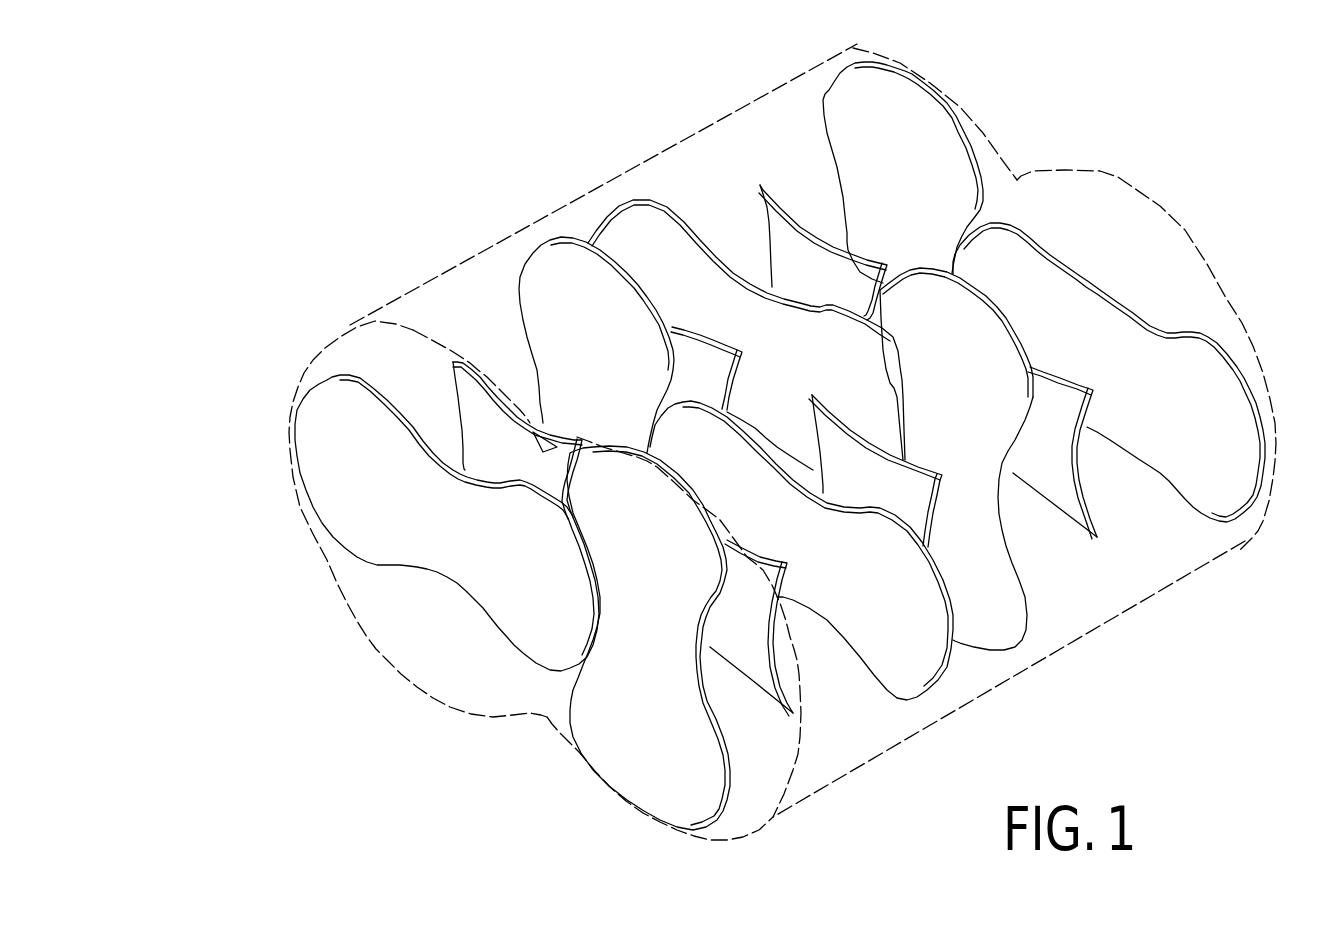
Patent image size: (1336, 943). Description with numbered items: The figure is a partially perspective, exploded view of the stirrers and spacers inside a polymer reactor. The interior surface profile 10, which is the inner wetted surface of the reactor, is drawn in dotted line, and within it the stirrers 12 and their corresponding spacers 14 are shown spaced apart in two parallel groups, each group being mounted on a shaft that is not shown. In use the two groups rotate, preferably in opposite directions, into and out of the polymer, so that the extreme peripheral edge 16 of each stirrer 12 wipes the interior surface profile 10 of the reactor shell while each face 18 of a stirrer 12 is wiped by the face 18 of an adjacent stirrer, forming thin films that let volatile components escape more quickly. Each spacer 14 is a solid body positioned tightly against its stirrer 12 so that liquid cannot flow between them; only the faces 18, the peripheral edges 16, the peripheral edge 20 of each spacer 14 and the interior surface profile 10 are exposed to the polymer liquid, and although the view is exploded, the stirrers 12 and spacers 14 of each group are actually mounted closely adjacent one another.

The interior surface profile 10 is at (328, 558).
The stirrer 12 is at (407, 580).
The spacer 14 is at (790, 243).
The peripheral edge 16 is at (957, 120).
The face 18 is at (330, 447).
The peripheral edge of spacer 20 is at (813, 233).